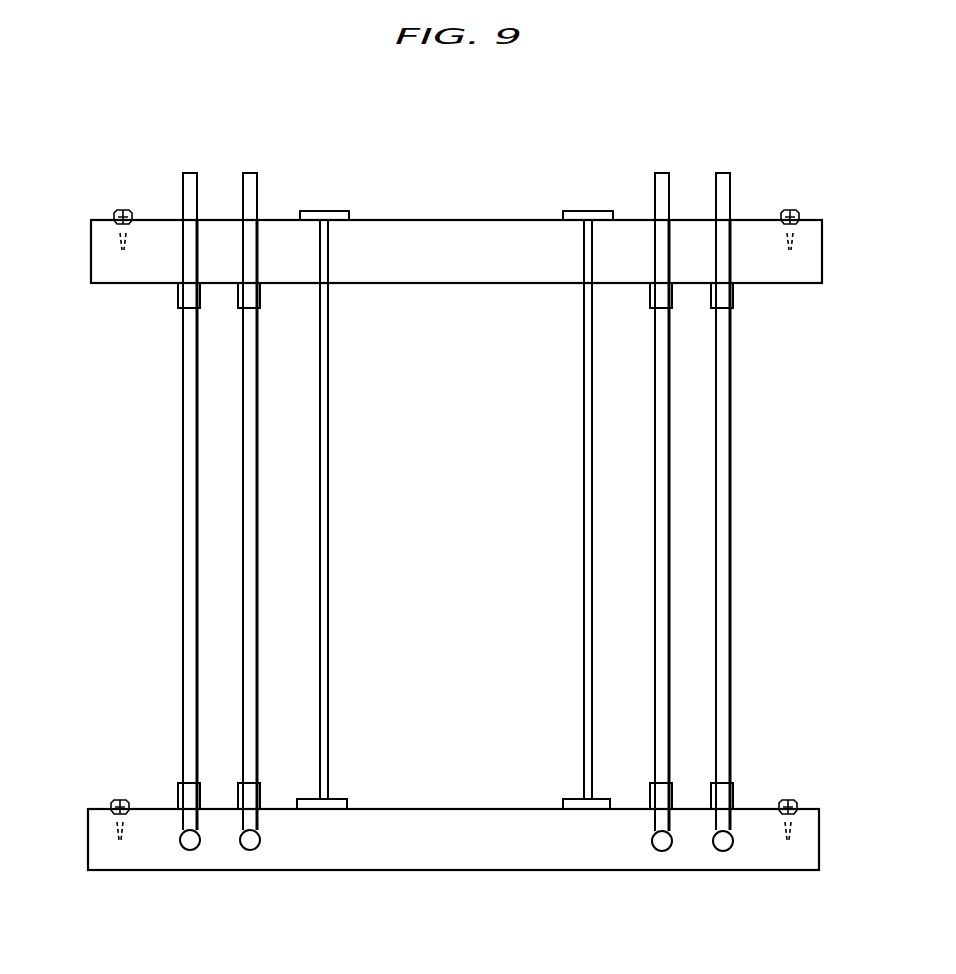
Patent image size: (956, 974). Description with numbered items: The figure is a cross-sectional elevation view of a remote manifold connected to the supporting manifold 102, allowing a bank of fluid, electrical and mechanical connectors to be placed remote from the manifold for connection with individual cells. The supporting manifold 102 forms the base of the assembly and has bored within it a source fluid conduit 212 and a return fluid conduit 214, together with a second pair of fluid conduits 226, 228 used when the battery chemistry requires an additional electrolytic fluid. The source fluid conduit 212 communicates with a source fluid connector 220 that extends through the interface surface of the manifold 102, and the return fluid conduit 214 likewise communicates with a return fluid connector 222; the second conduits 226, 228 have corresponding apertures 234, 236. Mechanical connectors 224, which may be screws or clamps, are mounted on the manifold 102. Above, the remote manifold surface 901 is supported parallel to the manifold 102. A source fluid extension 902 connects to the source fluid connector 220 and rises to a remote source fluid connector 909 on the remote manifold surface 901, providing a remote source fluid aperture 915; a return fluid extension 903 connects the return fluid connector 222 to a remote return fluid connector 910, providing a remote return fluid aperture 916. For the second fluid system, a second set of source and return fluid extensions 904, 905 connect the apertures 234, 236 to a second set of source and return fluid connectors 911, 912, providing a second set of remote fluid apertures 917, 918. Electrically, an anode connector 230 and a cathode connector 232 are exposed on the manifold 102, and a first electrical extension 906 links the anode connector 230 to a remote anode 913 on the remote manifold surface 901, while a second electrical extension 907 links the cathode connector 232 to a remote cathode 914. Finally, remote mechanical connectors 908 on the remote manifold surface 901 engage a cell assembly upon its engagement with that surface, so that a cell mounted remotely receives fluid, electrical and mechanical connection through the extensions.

The remote manifold surface 901 is at (91, 220).
The supporting manifold 102 is at (88, 838).
The remote mechanical connector 908 is at (119, 209).
The mechanical connector 224 is at (114, 800).
The source fluid extension 902 is at (182, 462).
The return fluid extension 903 is at (242, 528).
The second source fluid extension 904 is at (654, 528).
The second return fluid extension 905 is at (731, 452).
The remote source fluid aperture 915 is at (190, 172).
The remote return fluid aperture 916 is at (250, 172).
The second remote source fluid aperture 917 is at (662, 172).
The second remote return fluid aperture 918 is at (722, 172).
The remote source fluid connector 909 is at (182, 268).
The remote return fluid connector 910 is at (243, 252).
The second source fluid connector 911 is at (655, 252).
The second return fluid connector 912 is at (716, 252).
The source fluid connector 220 is at (178, 786).
The return fluid connector 222 is at (200, 790).
The aperture 234 is at (650, 797).
The aperture 236 is at (733, 790).
The first electrical extension 906 is at (329, 452).
The second electrical extension 907 is at (583, 462).
The remote anode 913 is at (326, 211).
The remote cathode 914 is at (590, 211).
The anode connector 230 is at (340, 799).
The cathode connector 232 is at (566, 799).
The source fluid conduit 212 is at (187, 850).
The return fluid conduit 214 is at (247, 850).
The second fluid conduit 226 is at (659, 851).
The second fluid conduit 228 is at (719, 851).